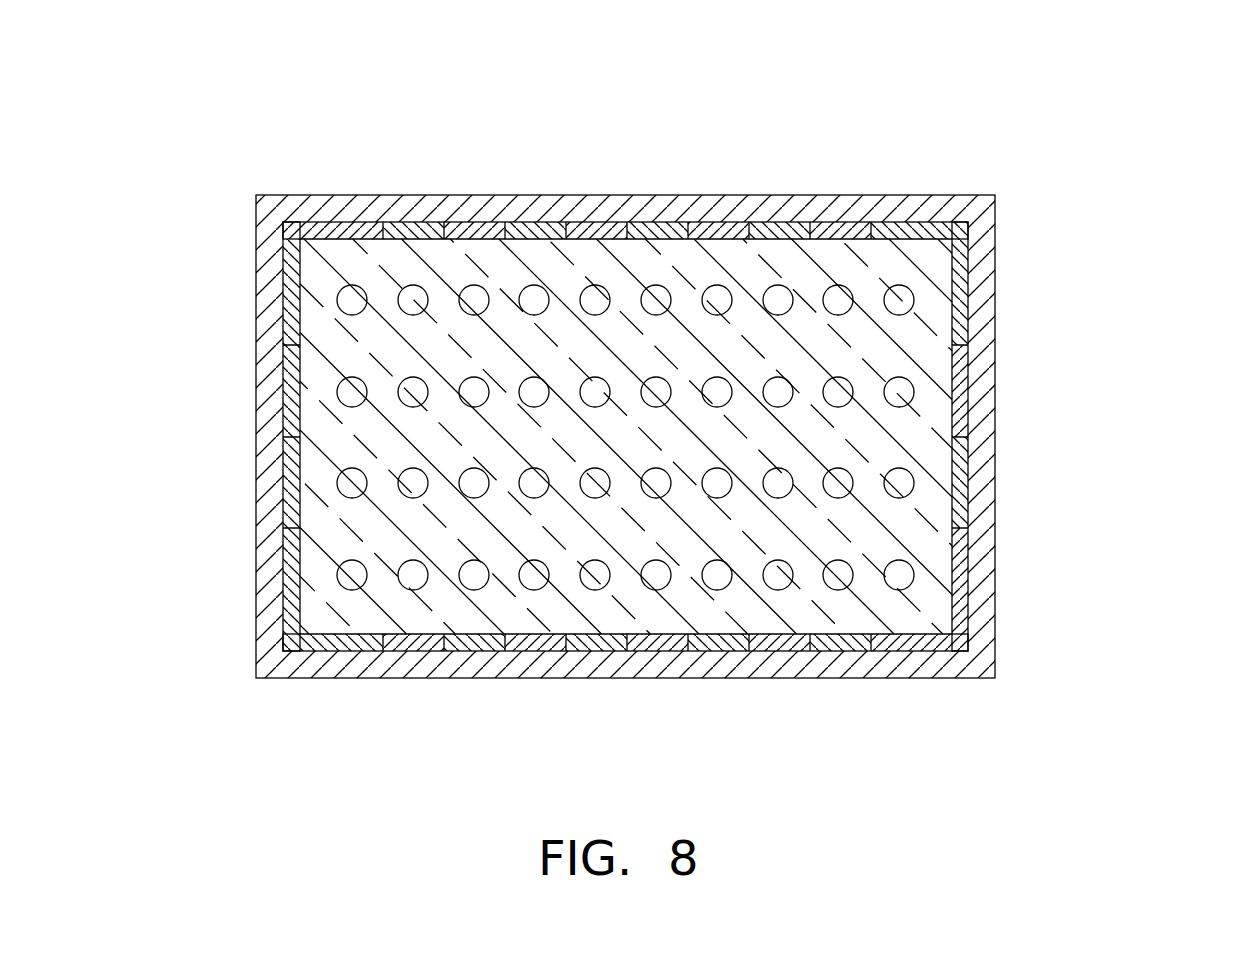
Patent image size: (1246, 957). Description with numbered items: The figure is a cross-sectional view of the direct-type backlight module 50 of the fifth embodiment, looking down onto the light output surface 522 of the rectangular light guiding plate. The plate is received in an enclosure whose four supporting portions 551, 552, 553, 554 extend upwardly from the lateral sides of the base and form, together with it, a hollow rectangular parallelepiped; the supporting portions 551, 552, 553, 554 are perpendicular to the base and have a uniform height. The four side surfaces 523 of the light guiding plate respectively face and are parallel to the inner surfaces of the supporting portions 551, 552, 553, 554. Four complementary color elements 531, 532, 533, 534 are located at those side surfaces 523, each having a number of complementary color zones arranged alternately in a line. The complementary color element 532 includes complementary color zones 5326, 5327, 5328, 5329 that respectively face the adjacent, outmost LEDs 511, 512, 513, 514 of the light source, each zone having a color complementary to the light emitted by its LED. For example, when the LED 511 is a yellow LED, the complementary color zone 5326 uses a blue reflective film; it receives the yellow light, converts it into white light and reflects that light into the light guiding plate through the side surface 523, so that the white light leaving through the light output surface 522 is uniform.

The direct-type backlight module 50 is at (665, 57).
The LED 511 is at (897, 577).
The LED 512 is at (897, 483).
The LED 513 is at (898, 388).
The LED 514 is at (898, 300).
The light output surface 522 is at (321, 268).
The side surfaces 523 is at (922, 248).
The complementary color element 531 is at (605, 227).
The complementary color element 532 is at (1086, 436).
The complementary color element 533 is at (593, 645).
The complementary color element 534 is at (296, 477).
The complementary color zone 5326 is at (1036, 578).
The complementary color zone 5327 is at (965, 485).
The complementary color zone 5328 is at (965, 398).
The complementary color zone 5329 is at (965, 330).
The supporting portion 551 is at (319, 208).
The supporting portion 552 is at (985, 626).
The supporting portion 553 is at (425, 665).
The supporting portion 554 is at (268, 389).